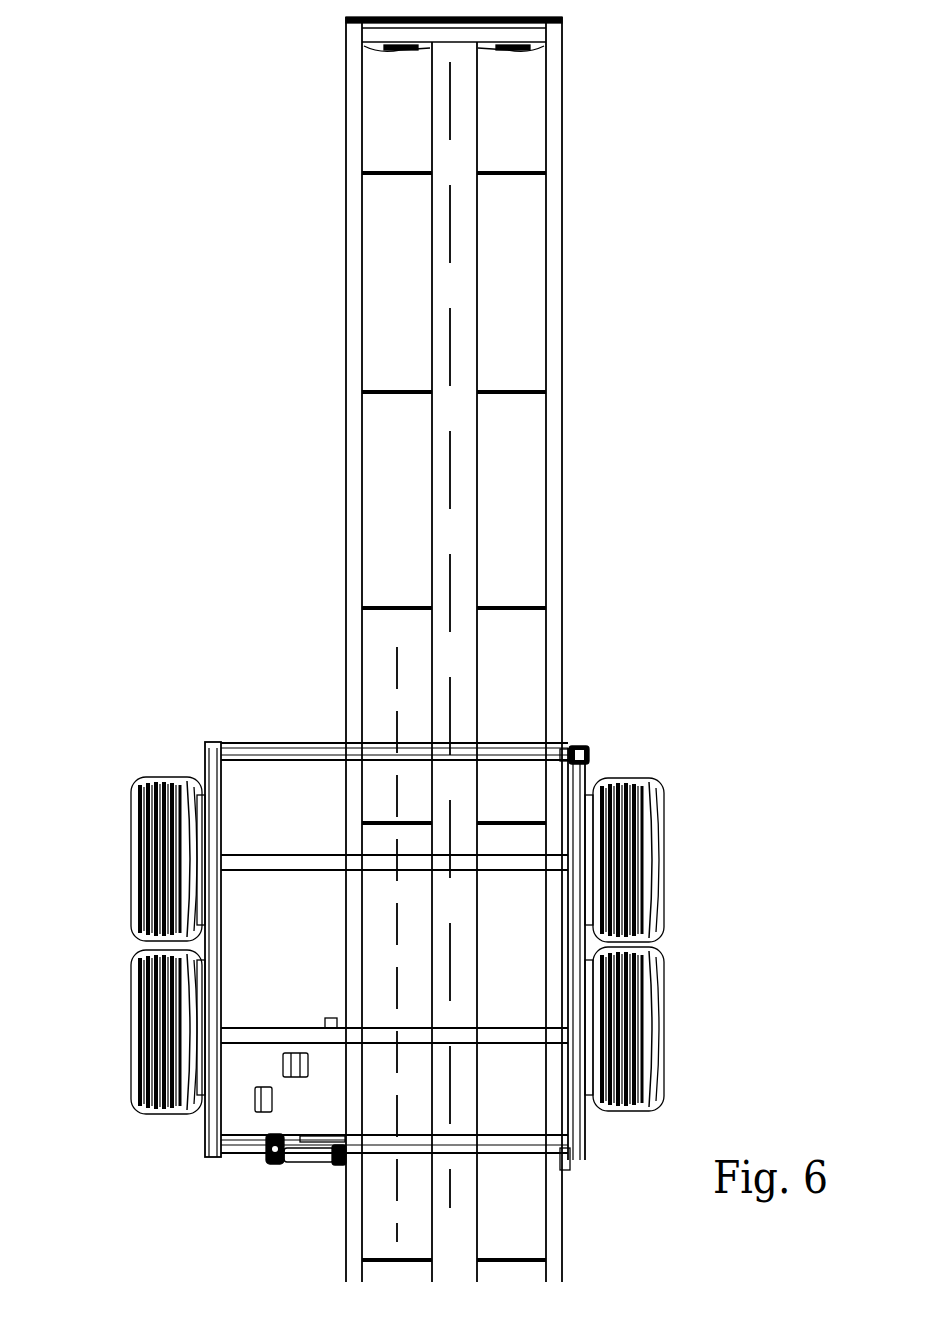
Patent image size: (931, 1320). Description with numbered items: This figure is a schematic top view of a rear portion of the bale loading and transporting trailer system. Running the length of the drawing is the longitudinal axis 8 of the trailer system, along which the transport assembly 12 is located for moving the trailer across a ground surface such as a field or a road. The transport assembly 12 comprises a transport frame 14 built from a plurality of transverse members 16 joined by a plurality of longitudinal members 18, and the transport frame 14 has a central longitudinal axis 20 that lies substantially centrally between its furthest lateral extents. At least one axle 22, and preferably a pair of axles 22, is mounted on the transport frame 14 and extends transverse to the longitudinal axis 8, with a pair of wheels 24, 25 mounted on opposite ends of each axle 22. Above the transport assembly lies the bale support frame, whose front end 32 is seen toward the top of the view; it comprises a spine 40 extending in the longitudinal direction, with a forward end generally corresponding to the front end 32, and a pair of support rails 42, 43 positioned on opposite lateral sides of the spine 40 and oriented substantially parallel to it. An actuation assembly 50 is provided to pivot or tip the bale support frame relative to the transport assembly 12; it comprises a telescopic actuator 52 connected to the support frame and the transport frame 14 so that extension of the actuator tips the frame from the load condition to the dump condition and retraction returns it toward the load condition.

The longitudinal axis 8 is at (450, 552).
The transport assembly 12 is at (196, 714).
The transport frame 14 is at (575, 748).
The transverse members 16 is at (238, 1158).
The longitudinal members 18 is at (205, 760).
The central longitudinal axis 20 is at (398, 663).
The axle 22 is at (300, 865).
The wheel 24 is at (130, 885).
The wheel 25 is at (655, 905).
The front end of the bale support frame 32 is at (338, 72).
The spine 40 is at (447, 475).
The support rail 42 is at (350, 360).
The support rail 43 is at (556, 343).
The actuation assembly 50 is at (316, 1191).
The telescopic actuator 52 is at (297, 1157).